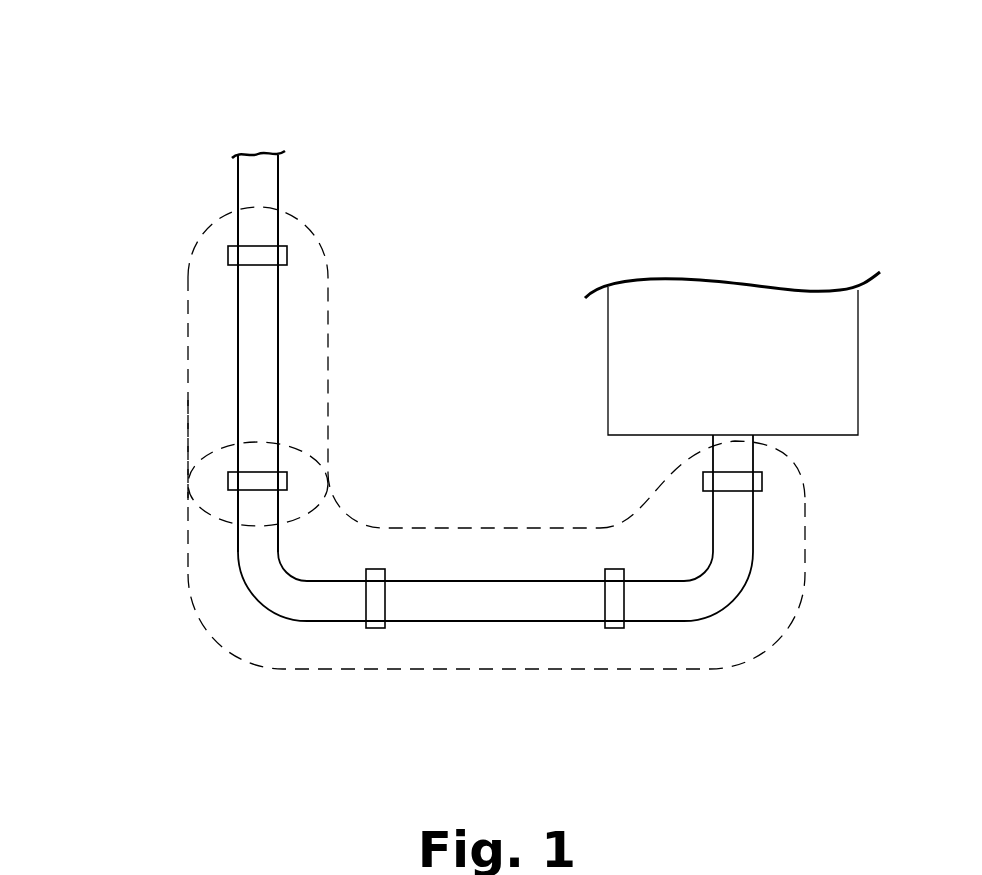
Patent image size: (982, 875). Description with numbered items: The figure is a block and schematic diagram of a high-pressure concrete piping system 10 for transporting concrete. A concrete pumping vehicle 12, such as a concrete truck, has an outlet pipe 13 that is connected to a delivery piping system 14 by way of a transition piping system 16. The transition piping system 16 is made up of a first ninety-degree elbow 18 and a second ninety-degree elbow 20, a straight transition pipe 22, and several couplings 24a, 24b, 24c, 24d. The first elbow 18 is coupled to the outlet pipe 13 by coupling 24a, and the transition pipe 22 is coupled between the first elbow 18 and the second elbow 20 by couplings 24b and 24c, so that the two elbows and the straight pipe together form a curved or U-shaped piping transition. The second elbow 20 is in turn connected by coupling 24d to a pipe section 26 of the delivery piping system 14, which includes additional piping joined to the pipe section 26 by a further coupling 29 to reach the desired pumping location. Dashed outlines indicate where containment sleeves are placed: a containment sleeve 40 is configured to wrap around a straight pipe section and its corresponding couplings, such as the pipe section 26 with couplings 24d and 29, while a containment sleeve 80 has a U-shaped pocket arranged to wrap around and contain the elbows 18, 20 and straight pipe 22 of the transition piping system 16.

The high-pressure concrete piping system 10 is at (683, 104).
The concrete pumping vehicle 12 is at (820, 360).
The outlet pipe 13 is at (755, 445).
The delivery piping system 14 is at (145, 334).
The transition piping system 16 is at (573, 730).
The first 90-degree elbow 18 is at (722, 582).
The second 90-degree elbow 20 is at (250, 590).
The straight transition pipe 22 is at (486, 608).
The coupling 24a is at (703, 480).
The coupling 24b is at (615, 570).
The coupling 24c is at (375, 570).
The coupling 24d is at (277, 482).
The pipe section 26 is at (257, 360).
The coupling 29 is at (277, 256).
The containment sleeve 40 is at (187, 432).
The containment sleeve 80 is at (412, 670).